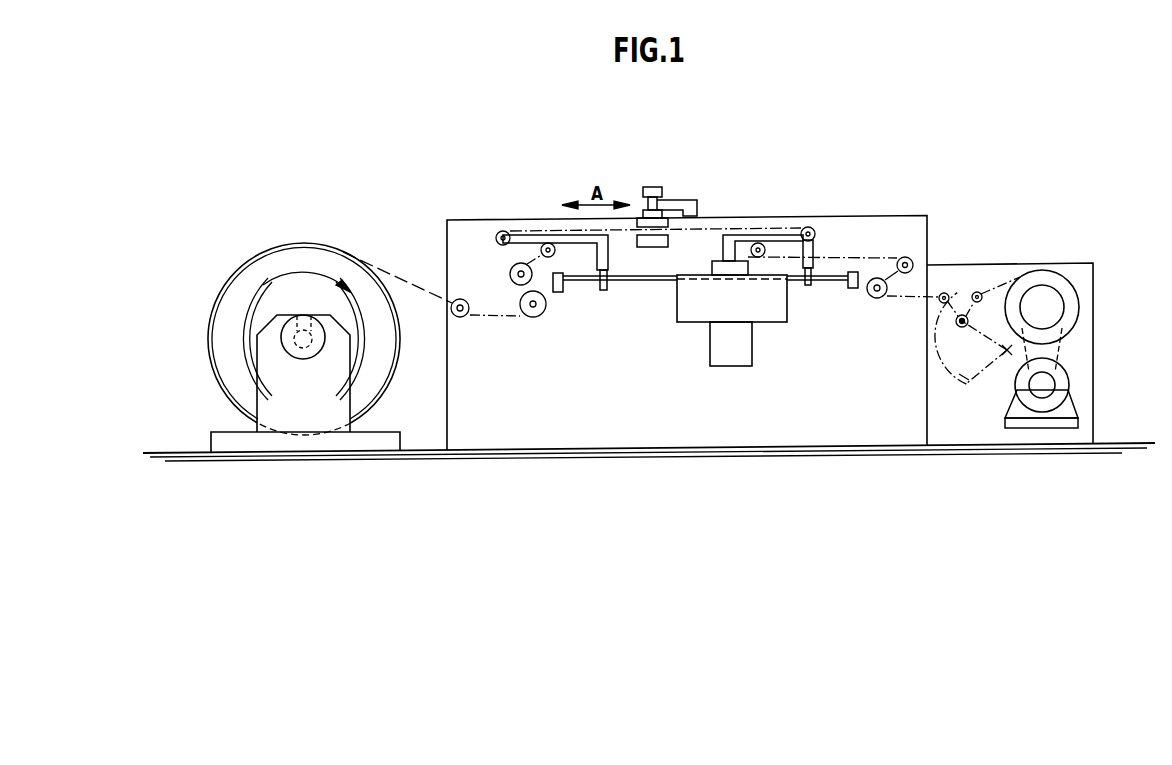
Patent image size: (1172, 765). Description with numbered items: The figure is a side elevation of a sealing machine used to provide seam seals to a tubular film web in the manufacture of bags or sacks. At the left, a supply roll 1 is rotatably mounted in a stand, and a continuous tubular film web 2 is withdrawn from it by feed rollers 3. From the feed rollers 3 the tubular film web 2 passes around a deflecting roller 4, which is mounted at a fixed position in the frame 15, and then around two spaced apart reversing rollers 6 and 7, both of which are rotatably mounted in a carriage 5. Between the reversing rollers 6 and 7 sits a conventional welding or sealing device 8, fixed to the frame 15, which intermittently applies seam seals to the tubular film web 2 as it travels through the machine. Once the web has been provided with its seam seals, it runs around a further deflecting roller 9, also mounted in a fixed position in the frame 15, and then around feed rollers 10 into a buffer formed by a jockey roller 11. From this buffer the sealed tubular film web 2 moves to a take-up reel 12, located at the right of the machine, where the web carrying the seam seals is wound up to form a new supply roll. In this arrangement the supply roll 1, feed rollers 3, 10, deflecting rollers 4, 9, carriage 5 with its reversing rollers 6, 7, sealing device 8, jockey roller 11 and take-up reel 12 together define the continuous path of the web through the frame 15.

The supply roll 1 is at (228, 283).
The tubular film web 2 is at (400, 285).
The feed rollers 3 is at (523, 295).
The deflecting roller 4 is at (556, 252).
The carriage 5 is at (608, 247).
The reversing roller 6 is at (501, 231).
The reversing roller 7 is at (809, 227).
The welding or sealing device 8 is at (653, 186).
The deflecting roller 9 is at (760, 242).
The feed rollers 10 is at (885, 291).
The jockey roller 11 is at (933, 330).
The take-up reel 12 is at (1068, 306).
The frame 15 is at (615, 397).